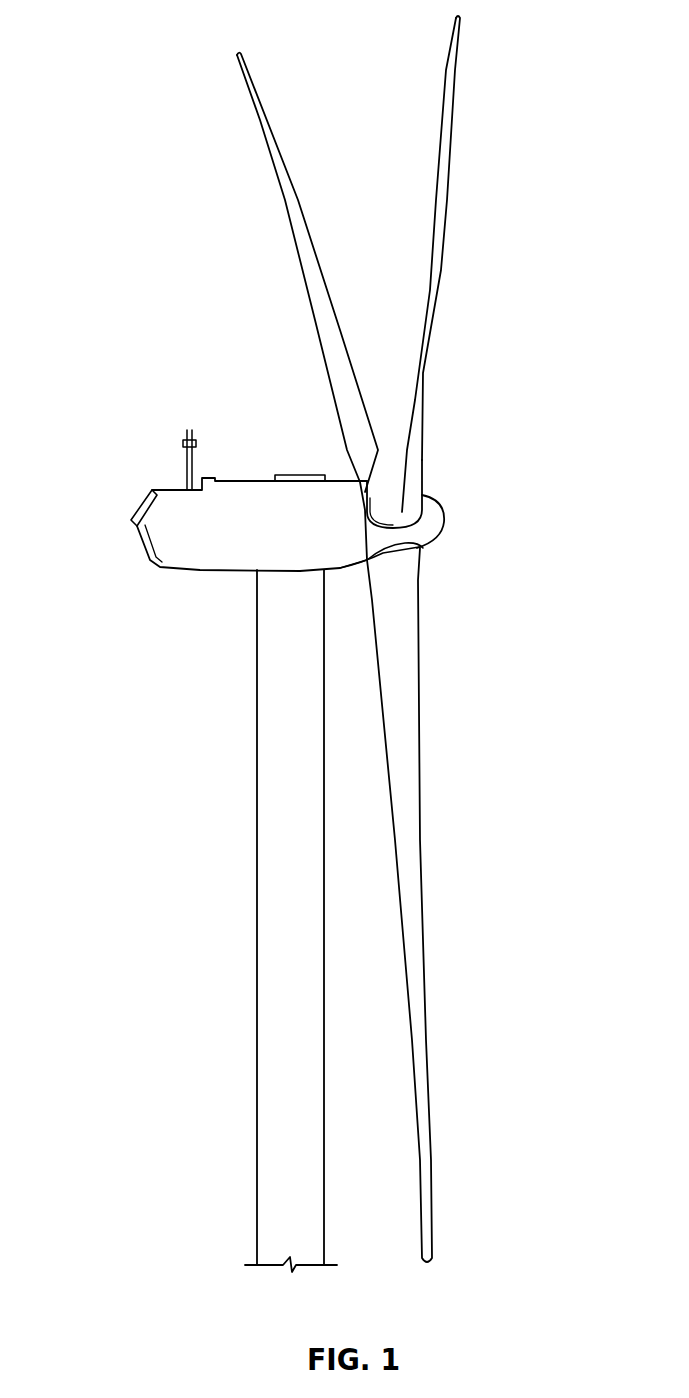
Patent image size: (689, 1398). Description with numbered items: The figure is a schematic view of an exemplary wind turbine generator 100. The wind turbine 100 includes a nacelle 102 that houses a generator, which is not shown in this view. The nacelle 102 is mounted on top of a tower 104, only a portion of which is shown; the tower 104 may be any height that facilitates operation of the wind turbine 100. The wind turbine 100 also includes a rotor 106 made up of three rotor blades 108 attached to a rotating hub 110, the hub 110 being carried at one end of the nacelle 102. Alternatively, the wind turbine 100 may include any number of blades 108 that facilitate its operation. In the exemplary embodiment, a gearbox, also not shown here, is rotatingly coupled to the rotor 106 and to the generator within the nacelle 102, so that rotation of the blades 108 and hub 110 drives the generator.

The wind turbine generator 100 is at (132, 77).
The nacelle 102 is at (204, 574).
The tower 104 is at (257, 878).
The rotor 106 is at (472, 251).
The rotor blades 108 is at (286, 161).
The rotating hub 110 is at (445, 530).